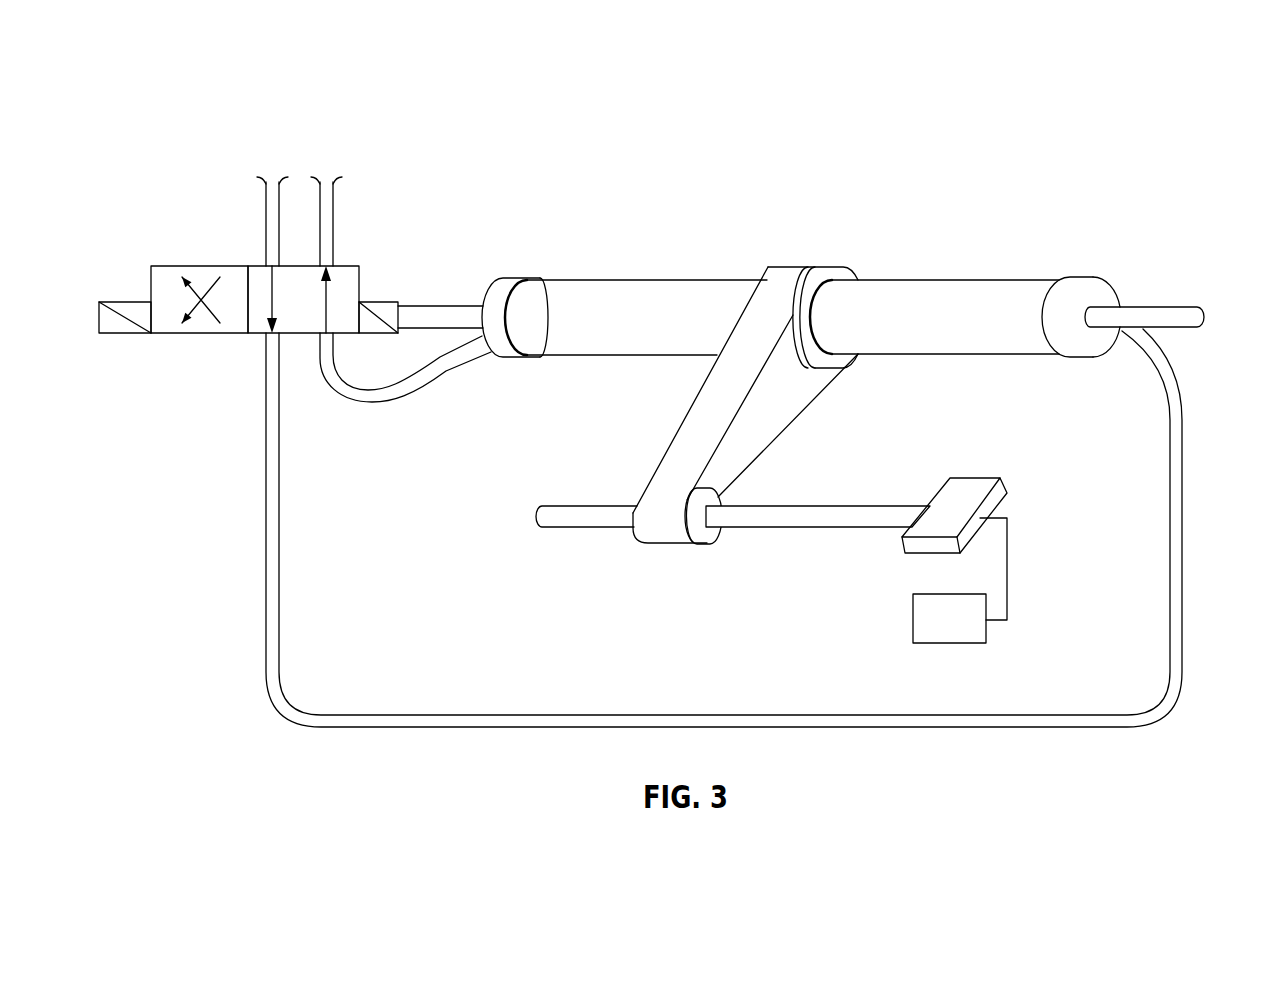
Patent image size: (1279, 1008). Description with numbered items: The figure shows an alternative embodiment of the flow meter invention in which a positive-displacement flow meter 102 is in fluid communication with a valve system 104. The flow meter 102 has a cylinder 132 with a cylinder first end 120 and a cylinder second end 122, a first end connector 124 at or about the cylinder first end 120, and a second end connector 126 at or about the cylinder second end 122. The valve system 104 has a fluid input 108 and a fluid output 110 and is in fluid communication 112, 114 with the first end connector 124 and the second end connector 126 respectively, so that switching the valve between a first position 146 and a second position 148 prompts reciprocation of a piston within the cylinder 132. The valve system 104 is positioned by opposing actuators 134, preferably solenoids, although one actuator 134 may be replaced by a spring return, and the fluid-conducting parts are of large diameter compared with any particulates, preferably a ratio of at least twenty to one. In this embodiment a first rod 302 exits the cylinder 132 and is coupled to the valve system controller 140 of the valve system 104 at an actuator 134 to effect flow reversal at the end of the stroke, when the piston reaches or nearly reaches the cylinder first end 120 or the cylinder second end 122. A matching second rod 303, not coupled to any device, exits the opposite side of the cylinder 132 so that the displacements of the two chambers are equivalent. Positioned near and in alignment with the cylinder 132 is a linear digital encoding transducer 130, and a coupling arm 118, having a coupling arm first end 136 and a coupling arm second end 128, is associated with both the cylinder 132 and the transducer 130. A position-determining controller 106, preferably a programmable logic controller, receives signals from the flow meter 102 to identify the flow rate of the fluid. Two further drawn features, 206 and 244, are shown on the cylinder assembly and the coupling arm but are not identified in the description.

The positive-displacement flow meter 102 is at (1014, 223).
The valve system 104 is at (254, 253).
The position-determining controller 106 is at (965, 647).
The fluid input 108 is at (266, 204).
The fluid output 110 is at (337, 204).
The fluid communication 112 is at (373, 402).
The fluid communication 114 is at (1183, 612).
The coupling arm 118 is at (703, 402).
The cylinder first end 120 is at (557, 278).
The cylinder second end 122 is at (951, 299).
The first end connector 124 is at (527, 278).
The second end connector 126 is at (1097, 283).
The coupling arm second end 128 is at (657, 480).
The linear digital encoding transducer 130 is at (972, 482).
The cylinder 132 is at (920, 283).
The actuator 134 is at (128, 300).
The coupling arm first end 136 is at (795, 268).
The valve system controller 140 is at (432, 261).
The first position 146 is at (348, 262).
The second position 148 is at (198, 262).
The drum end face 206 is at (855, 272).
The shaft pulley 244 is at (700, 532).
The first rod 302 is at (417, 305).
The second rod 303 is at (1147, 312).